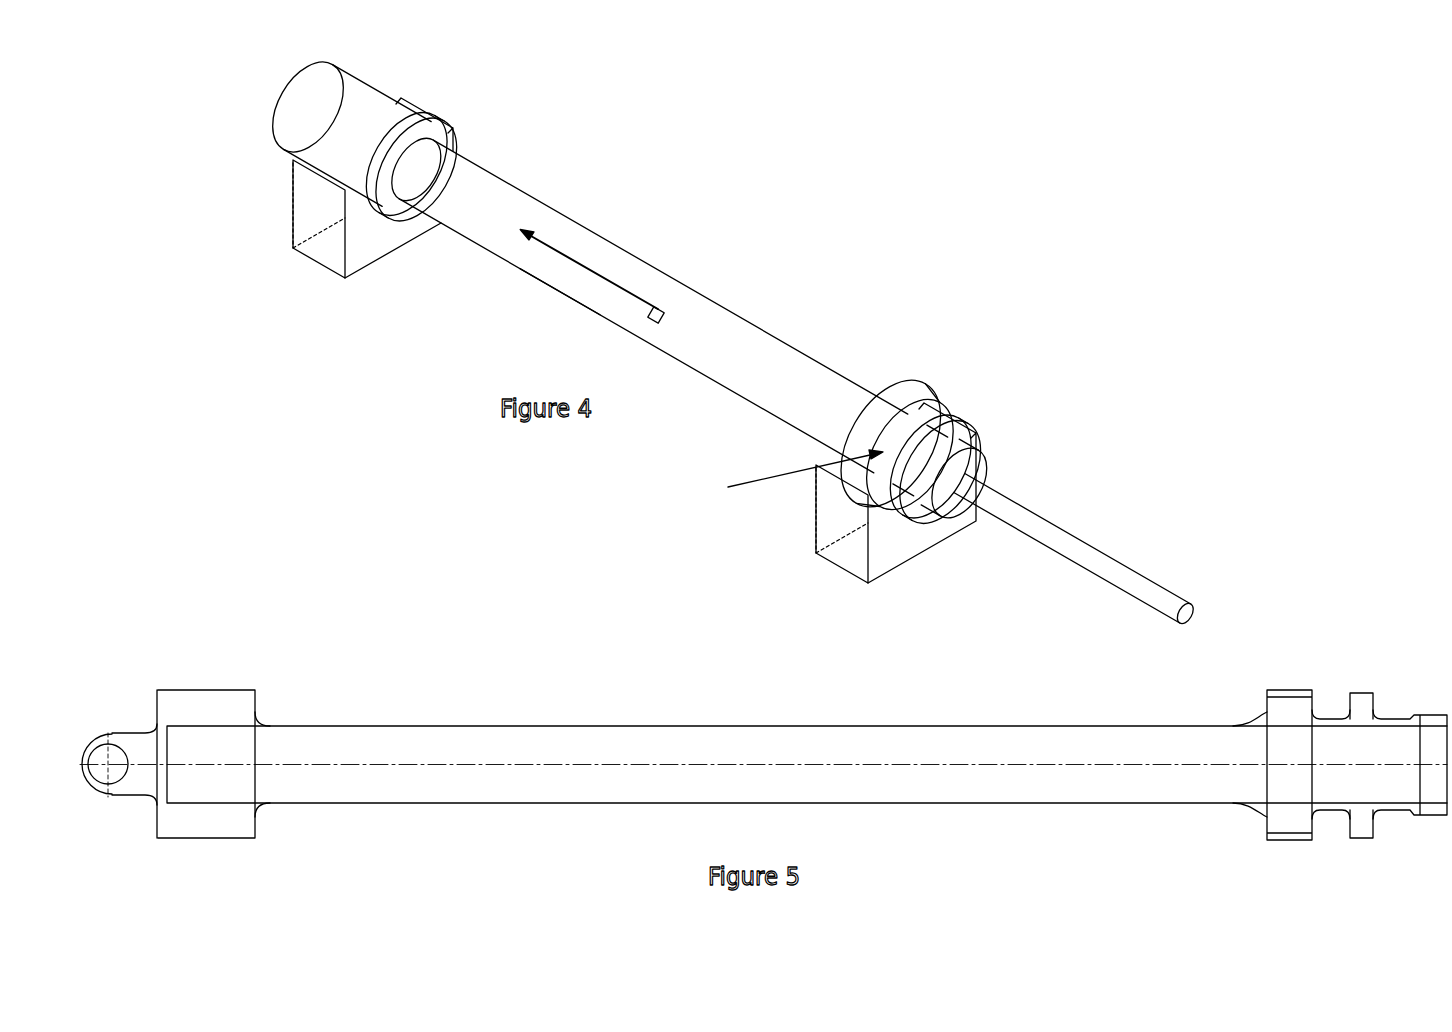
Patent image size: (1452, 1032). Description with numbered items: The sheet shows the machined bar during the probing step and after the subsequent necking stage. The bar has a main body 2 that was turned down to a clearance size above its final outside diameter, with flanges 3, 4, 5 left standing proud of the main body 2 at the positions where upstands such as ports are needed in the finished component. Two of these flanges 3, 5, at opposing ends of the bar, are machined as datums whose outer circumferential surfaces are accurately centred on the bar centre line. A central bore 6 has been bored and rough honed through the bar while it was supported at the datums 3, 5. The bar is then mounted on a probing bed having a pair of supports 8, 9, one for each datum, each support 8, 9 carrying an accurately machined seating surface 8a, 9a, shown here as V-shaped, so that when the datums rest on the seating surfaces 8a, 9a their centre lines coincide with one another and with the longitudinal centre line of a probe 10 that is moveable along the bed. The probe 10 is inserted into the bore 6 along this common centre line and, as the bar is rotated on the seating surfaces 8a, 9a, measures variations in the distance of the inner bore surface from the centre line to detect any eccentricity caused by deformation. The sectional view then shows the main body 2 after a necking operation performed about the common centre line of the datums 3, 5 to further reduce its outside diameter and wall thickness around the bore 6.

In FIG. 4, the main body 2 is at (485, 265).
In FIG. 5, the main body 2 is at (540, 710).
In FIG. 4, the flange 3 is at (311, 146).
In FIG. 5, the flange 3 is at (225, 683).
In FIG. 4, the flange 4 is at (888, 396).
In FIG. 5, the flange 5 is at (1359, 677).
In FIG. 4, the central bore 6 is at (542, 283).
In FIG. 4, the support 8 is at (325, 251).
In FIG. 4, the seating surface 8a is at (397, 225).
In FIG. 4, the support 9 is at (820, 520).
In FIG. 4, the seating surface 9a is at (918, 519).
In FIG. 4, the probe 10 is at (658, 307).